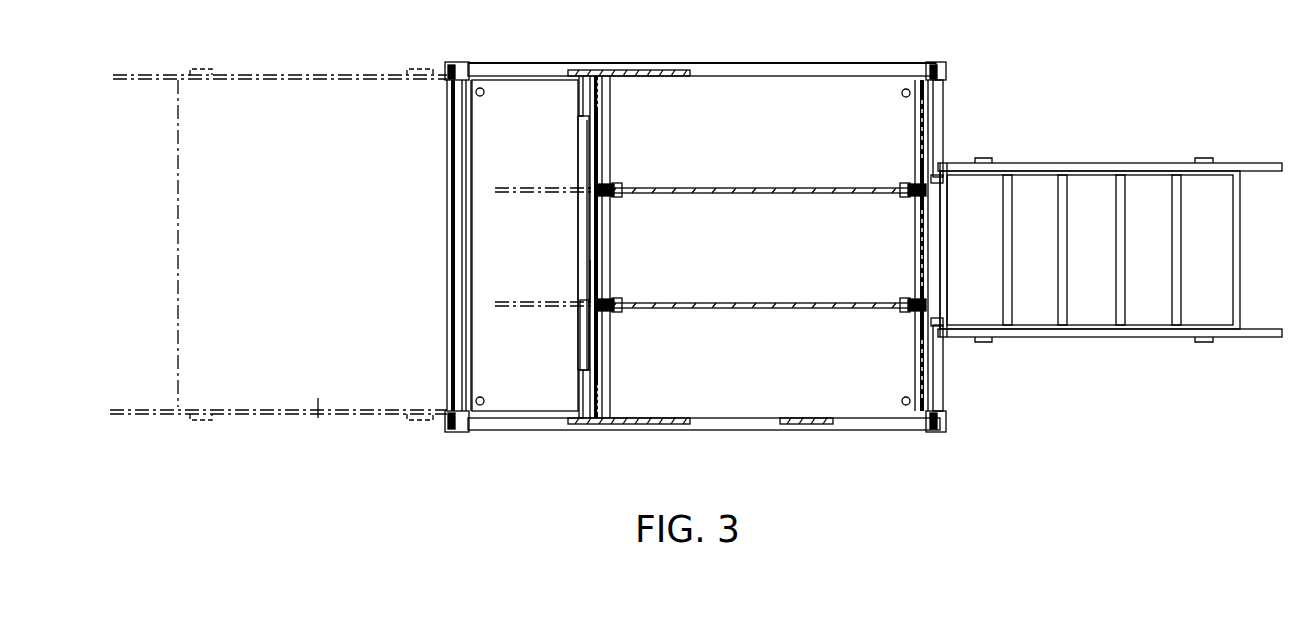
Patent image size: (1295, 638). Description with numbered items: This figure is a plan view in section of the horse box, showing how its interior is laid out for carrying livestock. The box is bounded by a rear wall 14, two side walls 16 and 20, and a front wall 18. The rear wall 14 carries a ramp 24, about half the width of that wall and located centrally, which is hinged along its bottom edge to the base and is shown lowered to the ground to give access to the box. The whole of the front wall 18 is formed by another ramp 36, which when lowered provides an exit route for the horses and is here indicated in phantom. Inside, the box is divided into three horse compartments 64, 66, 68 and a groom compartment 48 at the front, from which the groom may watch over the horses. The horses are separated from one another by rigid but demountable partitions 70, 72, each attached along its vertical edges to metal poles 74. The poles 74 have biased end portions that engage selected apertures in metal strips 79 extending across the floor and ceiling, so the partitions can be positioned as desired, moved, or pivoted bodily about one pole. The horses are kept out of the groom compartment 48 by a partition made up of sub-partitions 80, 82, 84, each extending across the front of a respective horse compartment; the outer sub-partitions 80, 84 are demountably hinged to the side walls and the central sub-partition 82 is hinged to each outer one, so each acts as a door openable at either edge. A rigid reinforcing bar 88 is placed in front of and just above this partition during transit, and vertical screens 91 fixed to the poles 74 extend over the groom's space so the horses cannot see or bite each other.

The rear wall 14 is at (947, 366).
The side wall 16 is at (717, 432).
The front wall 18 is at (440, 332).
The side wall 20 is at (716, 62).
The ramp 24 is at (1094, 318).
The ramp 36 is at (318, 422).
The groom compartment 48 is at (534, 100).
The compartment 64 is at (758, 379).
The compartment 66 is at (753, 277).
The compartment 68 is at (748, 146).
The partition 70 is at (798, 308).
The partition 72 is at (786, 194).
The metal poles 74 is at (608, 194).
The metal strips 79 is at (606, 372).
The sub-partition 80 is at (590, 352).
The central sub-partition 82 is at (591, 276).
The sub-partition 84 is at (585, 147).
The reinforcing bar 88 is at (586, 254).
The vertical screens 91 is at (510, 196).